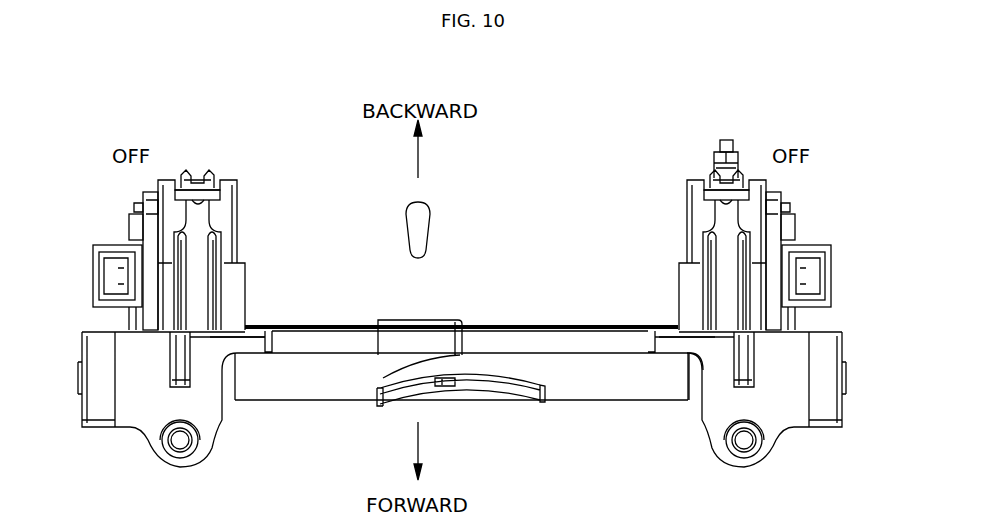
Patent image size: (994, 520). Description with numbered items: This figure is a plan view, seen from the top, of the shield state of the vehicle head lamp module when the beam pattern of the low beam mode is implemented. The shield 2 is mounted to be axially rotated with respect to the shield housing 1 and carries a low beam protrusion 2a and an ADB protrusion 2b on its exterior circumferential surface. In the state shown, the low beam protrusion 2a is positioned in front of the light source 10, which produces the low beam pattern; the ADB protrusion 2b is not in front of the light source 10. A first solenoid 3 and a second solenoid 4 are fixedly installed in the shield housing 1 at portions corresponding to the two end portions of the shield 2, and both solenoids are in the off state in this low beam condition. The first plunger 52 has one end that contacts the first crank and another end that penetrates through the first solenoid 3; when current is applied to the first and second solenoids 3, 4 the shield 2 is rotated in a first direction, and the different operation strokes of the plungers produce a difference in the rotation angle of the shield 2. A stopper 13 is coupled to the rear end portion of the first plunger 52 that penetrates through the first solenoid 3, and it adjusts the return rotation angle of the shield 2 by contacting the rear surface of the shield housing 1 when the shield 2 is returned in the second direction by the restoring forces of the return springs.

The shield housing 1 is at (132, 408).
The shield 2 is at (298, 388).
The low beam protrusion 2a is at (515, 390).
The ADB protrusion 2b is at (394, 325).
The first solenoid 3 is at (758, 231).
The second solenoid 4 is at (162, 206).
The light source 10 is at (423, 233).
The stopper 13 is at (718, 168).
The first plunger 52 is at (727, 140).